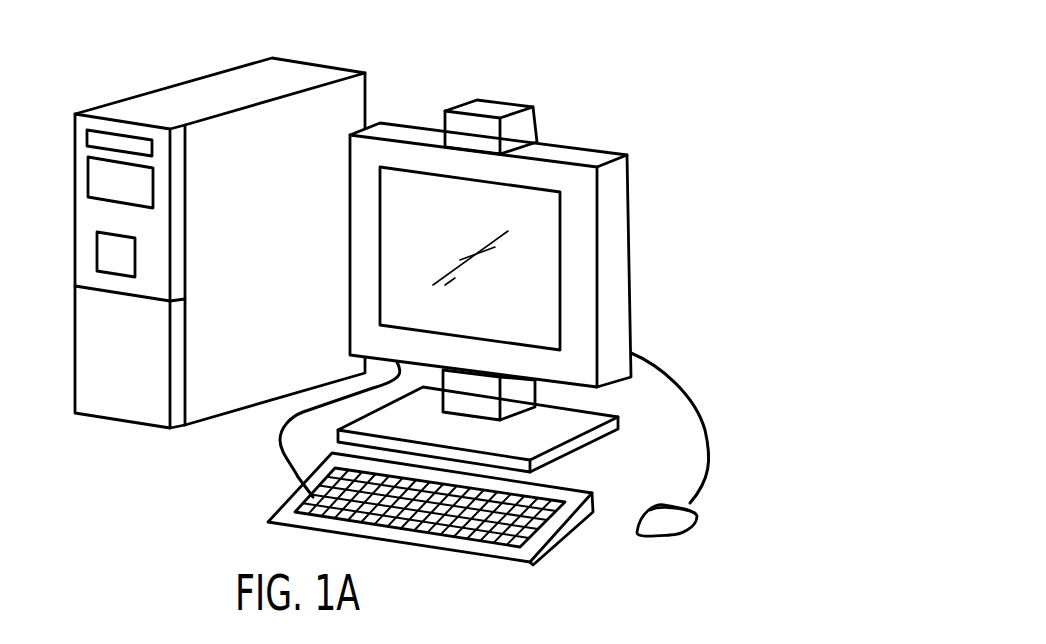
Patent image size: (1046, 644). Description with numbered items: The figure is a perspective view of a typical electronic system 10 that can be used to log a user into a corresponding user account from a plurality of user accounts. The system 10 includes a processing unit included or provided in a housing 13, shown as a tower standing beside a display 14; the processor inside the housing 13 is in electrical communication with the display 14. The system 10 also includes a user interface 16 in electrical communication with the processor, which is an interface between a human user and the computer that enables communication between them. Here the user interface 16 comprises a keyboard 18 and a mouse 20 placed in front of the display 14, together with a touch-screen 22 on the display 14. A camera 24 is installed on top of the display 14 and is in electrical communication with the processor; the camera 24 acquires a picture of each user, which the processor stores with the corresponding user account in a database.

The electronic system 10 is at (651, 54).
The housing 13 is at (115, 333).
The display 14 is at (580, 218).
The user interface 16 is at (608, 578).
The keyboard 18 is at (302, 483).
The mouse 20 is at (672, 535).
The touch-screen 22 is at (543, 255).
The camera 24 is at (478, 126).